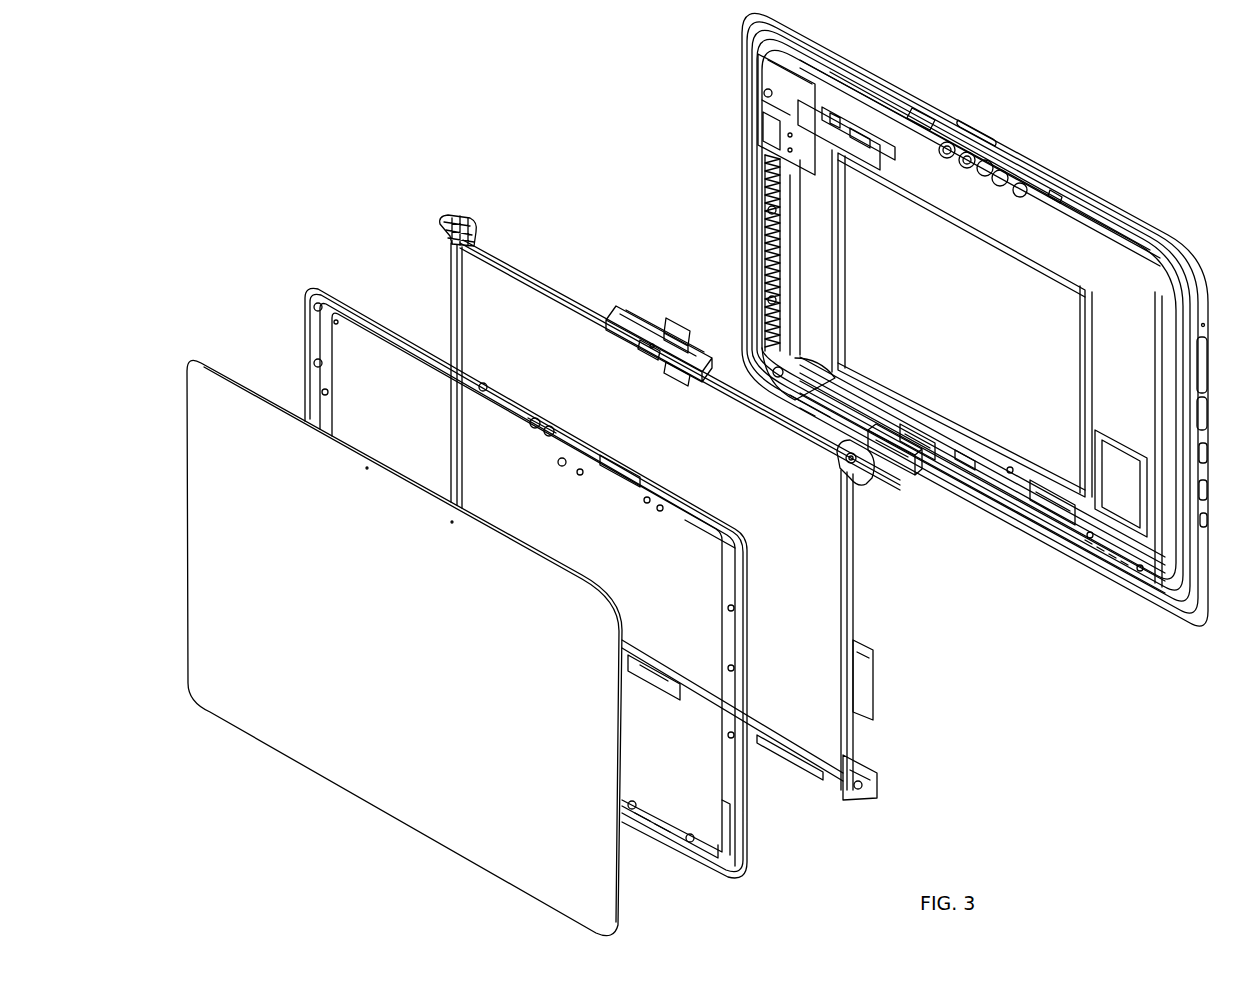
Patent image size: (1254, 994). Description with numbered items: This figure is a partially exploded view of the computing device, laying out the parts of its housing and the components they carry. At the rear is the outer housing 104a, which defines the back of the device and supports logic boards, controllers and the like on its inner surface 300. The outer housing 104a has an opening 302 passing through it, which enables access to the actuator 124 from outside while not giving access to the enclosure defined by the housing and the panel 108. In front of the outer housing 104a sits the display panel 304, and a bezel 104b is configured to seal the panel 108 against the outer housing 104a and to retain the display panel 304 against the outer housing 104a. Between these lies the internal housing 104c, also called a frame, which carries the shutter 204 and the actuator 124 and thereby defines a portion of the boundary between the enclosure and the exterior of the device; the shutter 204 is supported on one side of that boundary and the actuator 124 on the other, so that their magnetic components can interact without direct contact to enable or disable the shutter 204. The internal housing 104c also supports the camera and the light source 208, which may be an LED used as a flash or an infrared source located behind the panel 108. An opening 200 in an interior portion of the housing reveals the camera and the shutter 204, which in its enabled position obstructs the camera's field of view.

The outer housing 104a is at (982, 319).
The bezel 104b is at (515, 546).
The internal housing 104c is at (681, 498).
The panel 108 is at (297, 721).
The actuator 124 is at (675, 325).
The opening 200 is at (548, 436).
The shutter 204 is at (673, 366).
The light source 208 is at (650, 348).
The inner surface 300 is at (972, 352).
The opening 302 is at (985, 126).
The display panel 304 is at (813, 538).